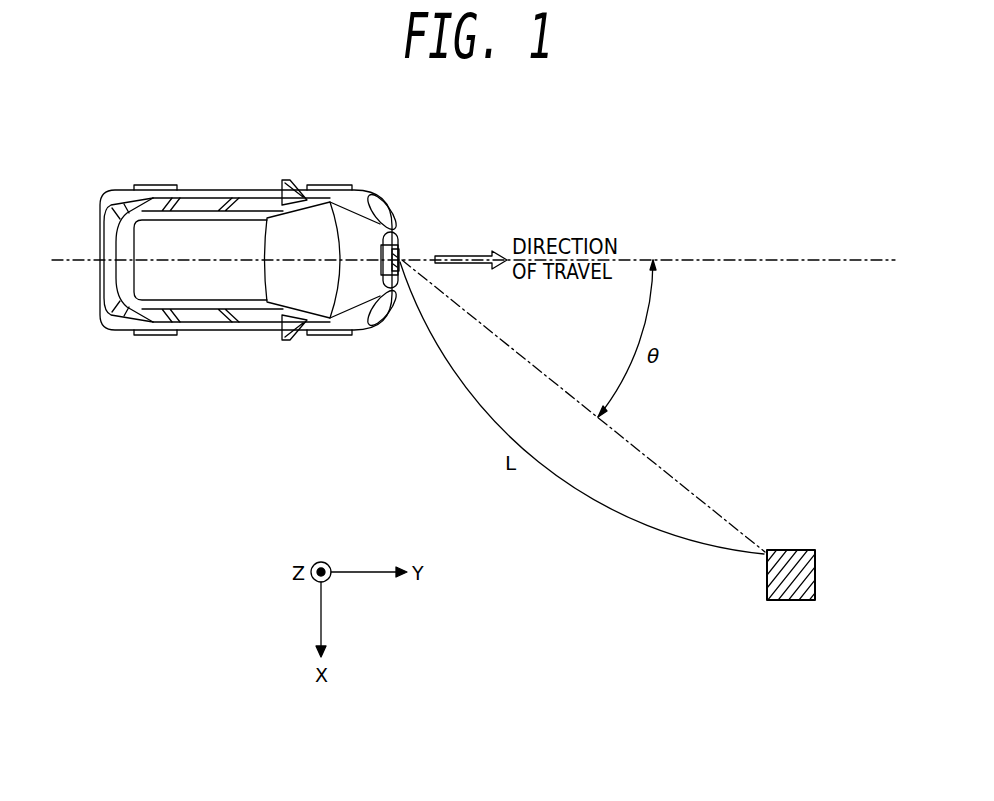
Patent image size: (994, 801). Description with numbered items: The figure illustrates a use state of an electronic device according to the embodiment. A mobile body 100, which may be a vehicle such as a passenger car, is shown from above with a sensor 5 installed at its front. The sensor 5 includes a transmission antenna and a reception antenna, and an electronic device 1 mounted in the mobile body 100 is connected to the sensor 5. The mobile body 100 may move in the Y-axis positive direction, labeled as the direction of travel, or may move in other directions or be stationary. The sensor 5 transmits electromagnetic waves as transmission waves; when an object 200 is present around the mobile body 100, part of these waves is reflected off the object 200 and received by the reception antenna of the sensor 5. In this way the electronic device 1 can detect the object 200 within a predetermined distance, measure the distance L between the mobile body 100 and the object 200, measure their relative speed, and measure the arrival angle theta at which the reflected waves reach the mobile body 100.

The mobile body 100 is at (368, 188).
The electronic device 1 is at (381, 250).
The sensor 5 is at (400, 253).
The object 200 is at (788, 550).